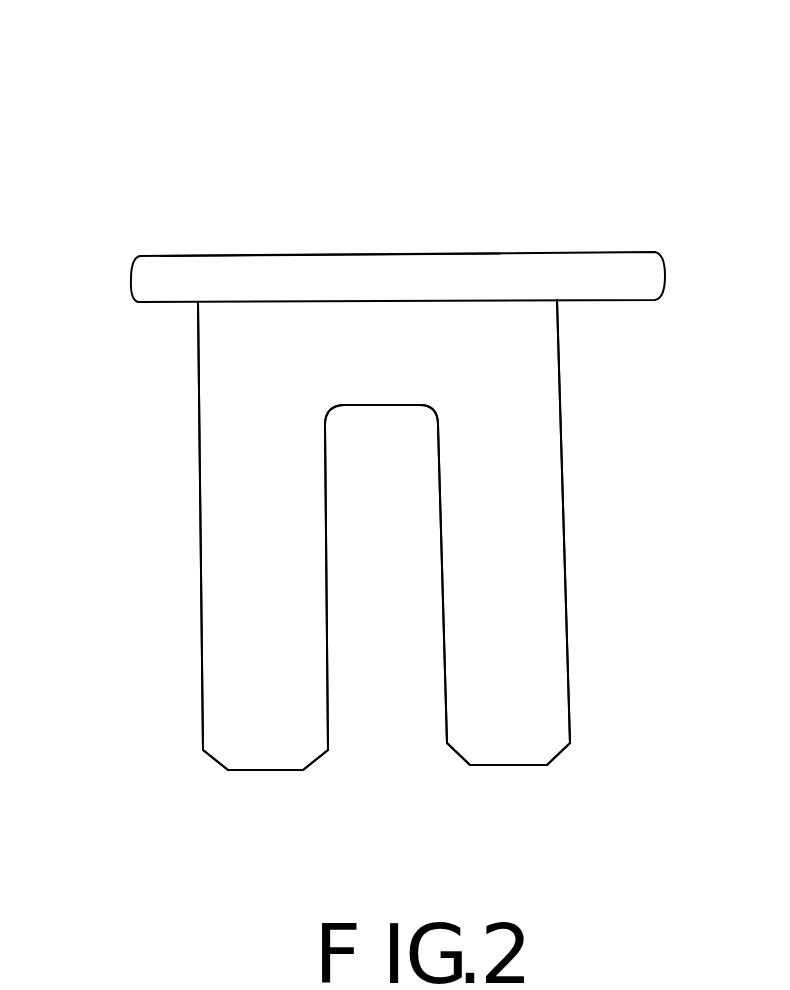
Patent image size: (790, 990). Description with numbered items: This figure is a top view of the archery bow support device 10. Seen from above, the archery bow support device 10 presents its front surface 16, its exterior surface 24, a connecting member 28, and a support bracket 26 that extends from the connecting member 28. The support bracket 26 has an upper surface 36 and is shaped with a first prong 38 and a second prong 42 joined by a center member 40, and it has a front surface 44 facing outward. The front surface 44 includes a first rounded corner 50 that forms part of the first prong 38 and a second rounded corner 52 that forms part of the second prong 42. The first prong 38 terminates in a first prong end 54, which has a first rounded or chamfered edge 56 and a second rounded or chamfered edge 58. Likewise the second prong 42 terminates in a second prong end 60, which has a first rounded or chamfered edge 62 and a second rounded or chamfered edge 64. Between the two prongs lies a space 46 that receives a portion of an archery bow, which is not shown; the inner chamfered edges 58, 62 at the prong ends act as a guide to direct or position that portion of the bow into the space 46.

The archery bow support device 10 is at (334, 106).
The front surface 16 is at (597, 303).
The exterior surface 24 is at (258, 253).
The connecting member 28 is at (384, 270).
The support bracket 26 is at (604, 611).
The upper surface 36 is at (226, 456).
The first prong 38 is at (218, 667).
The center member 40 is at (367, 365).
The second prong 42 is at (540, 550).
The front surface 44 is at (400, 405).
The space 46 is at (383, 634).
The first rounded corner 50 is at (327, 409).
The second rounded corner 52 is at (437, 418).
The first prong end 54 is at (258, 775).
The first rounded or chamfered edge 56 is at (213, 763).
The second rounded or chamfered edge 58 is at (318, 757).
The second prong end 60 is at (507, 767).
The first rounded or chamfered edge 62 is at (457, 753).
The second rounded or chamfered edge 64 is at (560, 757).